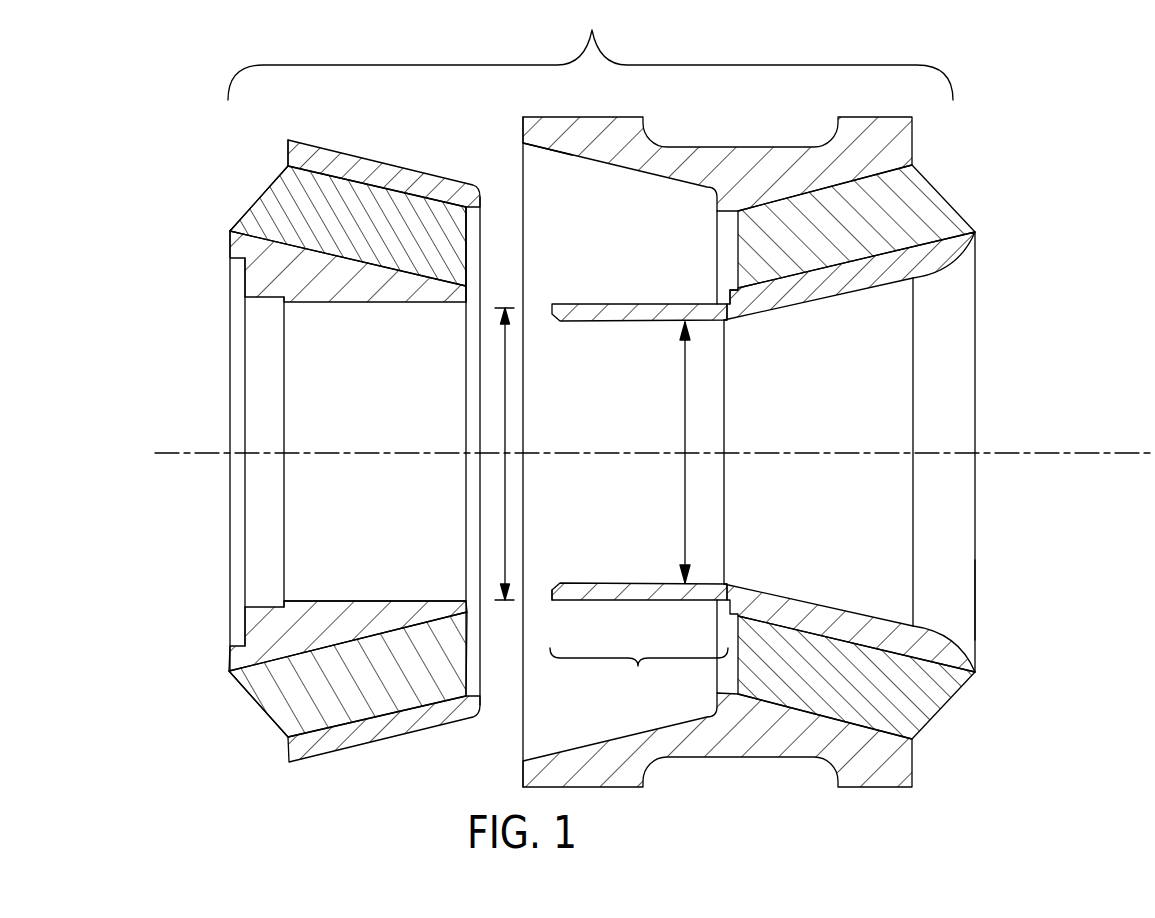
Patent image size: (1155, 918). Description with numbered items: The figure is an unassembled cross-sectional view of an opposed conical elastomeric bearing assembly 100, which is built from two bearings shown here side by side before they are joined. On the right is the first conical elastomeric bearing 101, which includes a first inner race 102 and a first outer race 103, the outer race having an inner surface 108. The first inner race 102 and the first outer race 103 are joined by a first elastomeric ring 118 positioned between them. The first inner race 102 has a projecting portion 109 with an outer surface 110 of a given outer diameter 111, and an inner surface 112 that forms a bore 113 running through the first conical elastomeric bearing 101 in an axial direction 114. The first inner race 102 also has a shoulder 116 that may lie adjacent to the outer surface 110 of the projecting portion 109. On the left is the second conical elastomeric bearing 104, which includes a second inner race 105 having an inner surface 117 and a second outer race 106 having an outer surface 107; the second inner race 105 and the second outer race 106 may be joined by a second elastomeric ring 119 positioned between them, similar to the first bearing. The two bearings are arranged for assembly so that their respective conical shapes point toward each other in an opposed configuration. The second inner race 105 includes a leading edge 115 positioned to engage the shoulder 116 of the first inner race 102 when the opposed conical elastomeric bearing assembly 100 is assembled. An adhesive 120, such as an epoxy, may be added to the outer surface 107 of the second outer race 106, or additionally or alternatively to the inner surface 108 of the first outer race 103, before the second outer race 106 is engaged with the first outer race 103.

The opposed conical elastomeric bearing assembly 100 is at (590, 50).
The first conical elastomeric bearing 101 is at (781, 431).
The first inner race 102 is at (975, 597).
The first outer race 103 is at (730, 147).
The second conical elastomeric bearing 104 is at (282, 454).
The second inner race 105 is at (230, 670).
The second outer race 106 is at (292, 155).
The outer surface 107 is at (397, 160).
The inner surface 108 is at (572, 158).
The projecting portion 109 is at (639, 674).
The outer surface 110 is at (572, 603).
The outer diameter 111 is at (503, 530).
The inner surface 112 is at (612, 583).
The bore 113 is at (684, 390).
The axial direction 114 is at (1085, 450).
The leading edge 115 is at (468, 289).
The shoulder 116 is at (733, 297).
The inner surface 117 is at (307, 600).
The first elastomeric ring 118 is at (916, 207).
The second elastomeric ring 119 is at (243, 225).
The adhesive 120 is at (360, 746).